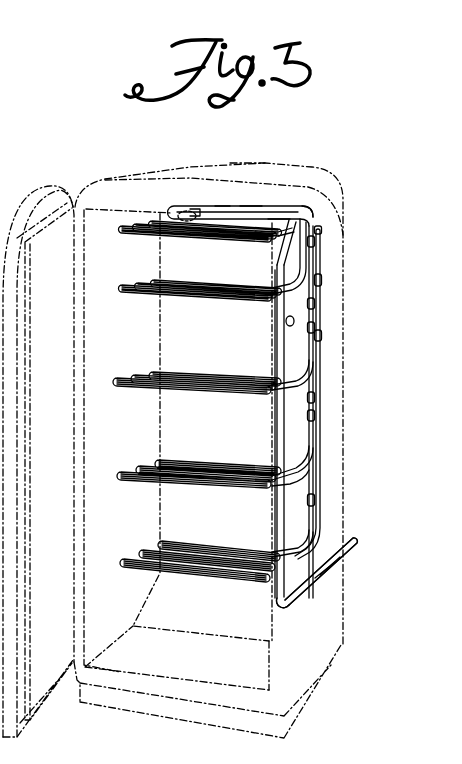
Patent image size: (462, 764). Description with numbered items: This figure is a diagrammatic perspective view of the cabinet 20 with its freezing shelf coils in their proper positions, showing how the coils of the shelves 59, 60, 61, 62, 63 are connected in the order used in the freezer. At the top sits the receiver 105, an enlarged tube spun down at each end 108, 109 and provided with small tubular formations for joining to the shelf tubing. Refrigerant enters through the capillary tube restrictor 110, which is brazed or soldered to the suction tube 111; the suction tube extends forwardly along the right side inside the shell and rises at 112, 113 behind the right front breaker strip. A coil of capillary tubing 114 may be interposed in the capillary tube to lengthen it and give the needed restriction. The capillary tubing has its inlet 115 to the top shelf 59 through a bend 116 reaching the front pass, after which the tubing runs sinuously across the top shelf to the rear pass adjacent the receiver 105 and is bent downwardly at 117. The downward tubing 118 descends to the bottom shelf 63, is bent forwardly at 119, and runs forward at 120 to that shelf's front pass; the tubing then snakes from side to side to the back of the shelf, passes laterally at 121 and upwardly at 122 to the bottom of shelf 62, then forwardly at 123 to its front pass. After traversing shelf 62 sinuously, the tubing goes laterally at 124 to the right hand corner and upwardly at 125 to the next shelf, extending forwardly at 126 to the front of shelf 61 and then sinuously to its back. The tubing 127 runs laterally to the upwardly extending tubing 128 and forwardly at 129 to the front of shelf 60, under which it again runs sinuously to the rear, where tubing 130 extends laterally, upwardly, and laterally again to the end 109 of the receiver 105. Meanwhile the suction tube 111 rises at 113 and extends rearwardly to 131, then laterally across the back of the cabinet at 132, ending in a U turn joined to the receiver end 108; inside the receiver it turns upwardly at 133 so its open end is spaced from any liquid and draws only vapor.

The cabinet 20 is at (273, 160).
The top shelf 59 is at (178, 245).
The shelf 60 is at (179, 304).
The shelf 61 is at (178, 397).
The shelf 62 is at (173, 489).
The bottom shelf 63 is at (173, 580).
The receiver 105 is at (228, 210).
The spun-down end of receiver 108 is at (182, 217).
The spun-down end of receiver 109 is at (279, 222).
The capillary tube restrictor 110 is at (331, 537).
The suction tube 111 is at (331, 557).
The upward extension of suction tube 112 is at (284, 411).
The upward extension of suction tube 113 is at (274, 432).
The coil of capillary tubing 114 is at (286, 319).
The capillary tubing inlet 115 is at (283, 246).
The bend 116 is at (260, 233).
The downward bend 117 is at (320, 228).
The downward tubing 118 is at (323, 359).
The forward bend 119 is at (331, 568).
The forward tubing 120 is at (293, 594).
The lateral tubing 121 is at (269, 548).
The upward tubing 122 is at (311, 492).
The forward tubing 123 is at (311, 474).
The lateral tubing 124 is at (300, 450).
The upward tubing 125 is at (318, 422).
The forward tubing 126 is at (288, 386).
The lateral tubing 127 is at (290, 371).
The upwardly extending tubing 128 is at (312, 326).
The forward tubing 129 is at (288, 289).
The connecting tubing 130 is at (313, 250).
The rearward extension of suction tube 131 is at (309, 213).
The lateral suction tube portion 132 is at (251, 208).
The upturned suction tube end 133 is at (197, 212).